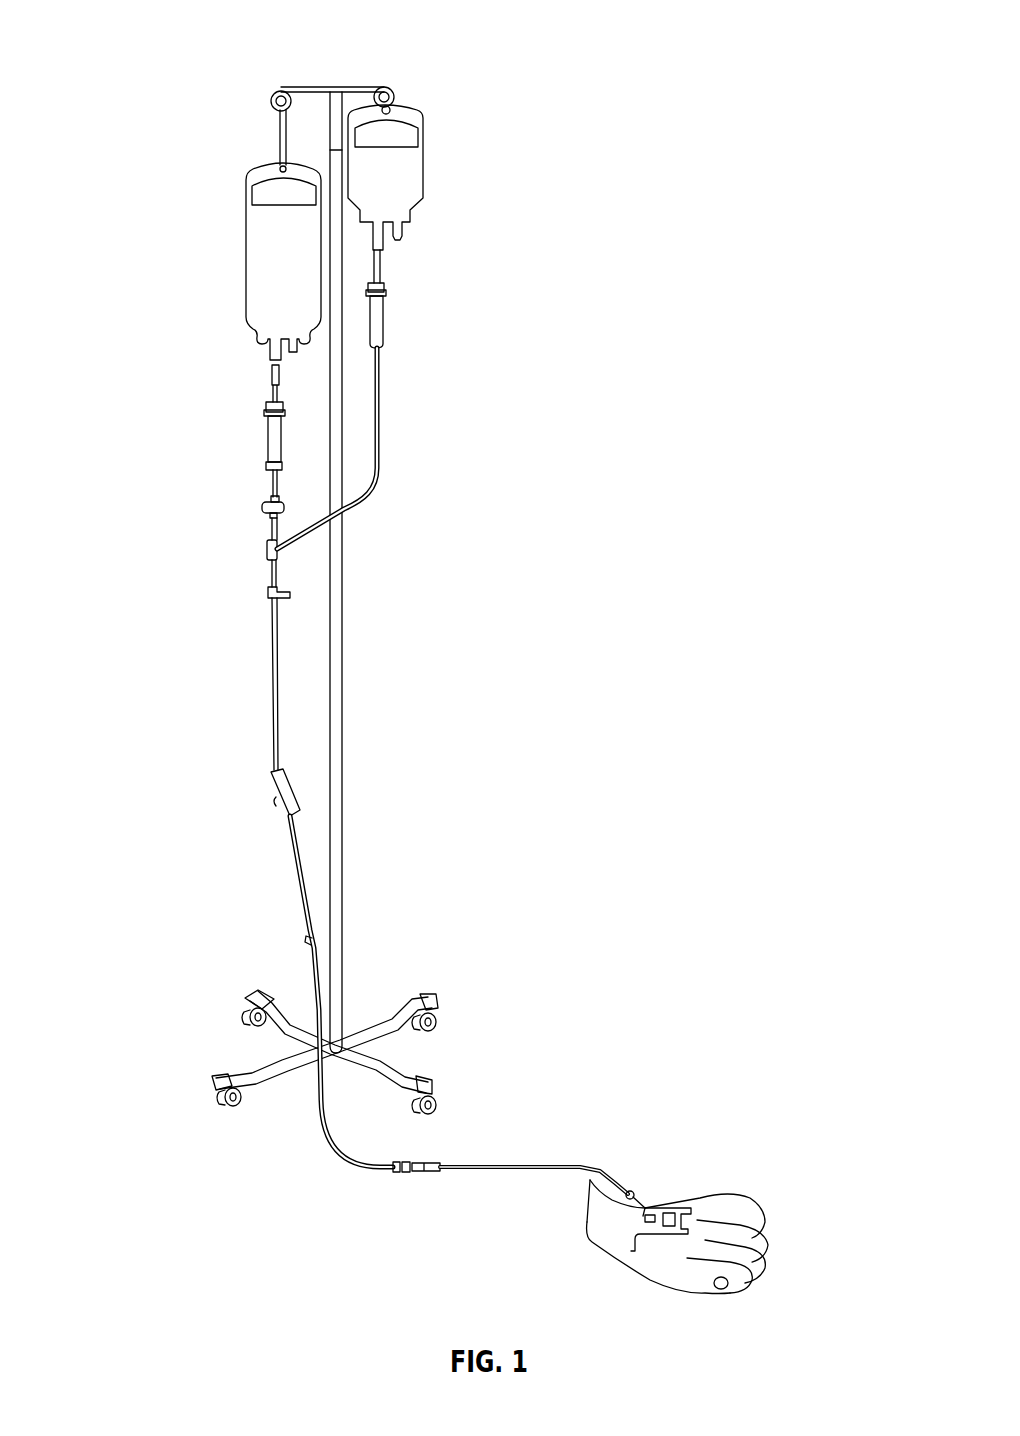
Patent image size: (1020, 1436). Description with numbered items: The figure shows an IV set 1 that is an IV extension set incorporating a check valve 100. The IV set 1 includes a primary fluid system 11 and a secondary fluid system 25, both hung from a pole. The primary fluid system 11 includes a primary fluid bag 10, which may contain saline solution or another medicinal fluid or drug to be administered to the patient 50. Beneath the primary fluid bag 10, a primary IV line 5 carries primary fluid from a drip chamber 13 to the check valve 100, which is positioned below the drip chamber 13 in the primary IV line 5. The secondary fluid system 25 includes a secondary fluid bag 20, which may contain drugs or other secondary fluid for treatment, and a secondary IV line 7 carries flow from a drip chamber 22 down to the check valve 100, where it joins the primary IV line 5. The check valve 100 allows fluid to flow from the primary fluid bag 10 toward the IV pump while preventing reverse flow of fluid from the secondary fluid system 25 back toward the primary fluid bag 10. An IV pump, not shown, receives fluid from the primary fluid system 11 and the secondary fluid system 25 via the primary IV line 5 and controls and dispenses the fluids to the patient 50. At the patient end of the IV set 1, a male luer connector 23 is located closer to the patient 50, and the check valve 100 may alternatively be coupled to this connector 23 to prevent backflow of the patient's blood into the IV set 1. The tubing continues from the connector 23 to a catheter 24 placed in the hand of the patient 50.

The IV set 1 is at (138, 31).
The primary IV line 5 is at (275, 640).
The secondary IV line 7 is at (380, 418).
The primary fluid bag 10 is at (255, 252).
The primary fluid system 11 is at (206, 311).
The drip chamber 13 is at (272, 440).
The secondary fluid bag 20 is at (410, 178).
The drip chamber 22 is at (388, 318).
The male luer connector 23 is at (440, 1163).
The catheter 24 is at (650, 1206).
The secondary fluid system 25 is at (468, 264).
The patient 50 is at (722, 1185).
The check valve 100 is at (261, 508).